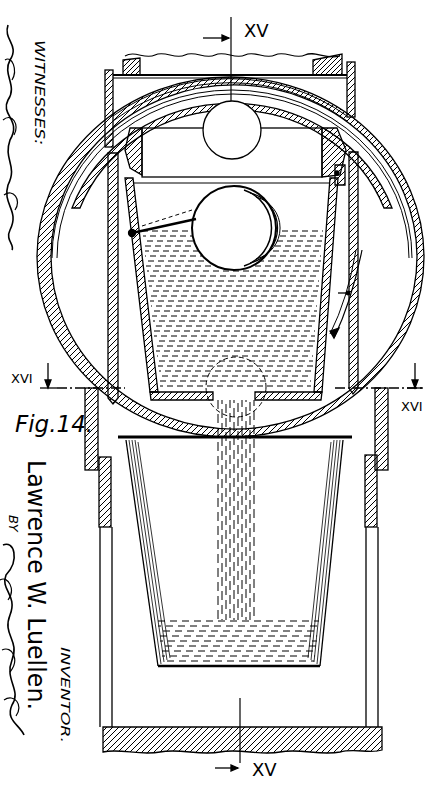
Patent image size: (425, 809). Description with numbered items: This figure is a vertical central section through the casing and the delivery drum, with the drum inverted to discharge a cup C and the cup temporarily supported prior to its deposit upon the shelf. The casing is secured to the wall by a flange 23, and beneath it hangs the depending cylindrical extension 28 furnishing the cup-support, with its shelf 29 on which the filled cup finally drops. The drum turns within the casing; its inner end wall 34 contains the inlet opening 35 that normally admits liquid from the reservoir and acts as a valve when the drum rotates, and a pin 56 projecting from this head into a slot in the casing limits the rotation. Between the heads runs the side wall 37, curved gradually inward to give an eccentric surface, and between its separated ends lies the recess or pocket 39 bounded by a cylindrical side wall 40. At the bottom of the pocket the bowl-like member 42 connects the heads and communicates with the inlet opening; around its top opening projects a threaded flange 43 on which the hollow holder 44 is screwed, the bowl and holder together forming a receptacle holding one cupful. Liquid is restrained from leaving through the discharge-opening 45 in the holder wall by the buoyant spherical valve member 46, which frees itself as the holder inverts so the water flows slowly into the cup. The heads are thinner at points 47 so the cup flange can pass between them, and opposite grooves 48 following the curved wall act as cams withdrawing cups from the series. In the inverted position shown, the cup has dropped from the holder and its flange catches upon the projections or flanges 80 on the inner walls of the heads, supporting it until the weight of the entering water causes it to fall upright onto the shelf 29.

The cup C is at (142, 73).
The flange 23 is at (265, 94).
The depending cylindrical extension 28 is at (99, 485).
The shelf 29 is at (270, 727).
The inner end wall 34 is at (376, 152).
The inlet opening 35 is at (418, 436).
The side wall 37 is at (63, 207).
The recess or pocket 39 is at (338, 337).
The cylindrical side wall 40 is at (109, 308).
The bowl-like member 42 is at (121, 143).
The threaded flange 43 is at (140, 183).
The hollow holder 44 is at (318, 385).
The discharge-opening 45 is at (215, 401).
The valve member 46 is at (236, 228).
The thinned points of the heads 47 is at (296, 78).
The grooves 48 is at (352, 127).
The pin 56 is at (416, 164).
The projections or flanges 80 is at (217, 440).